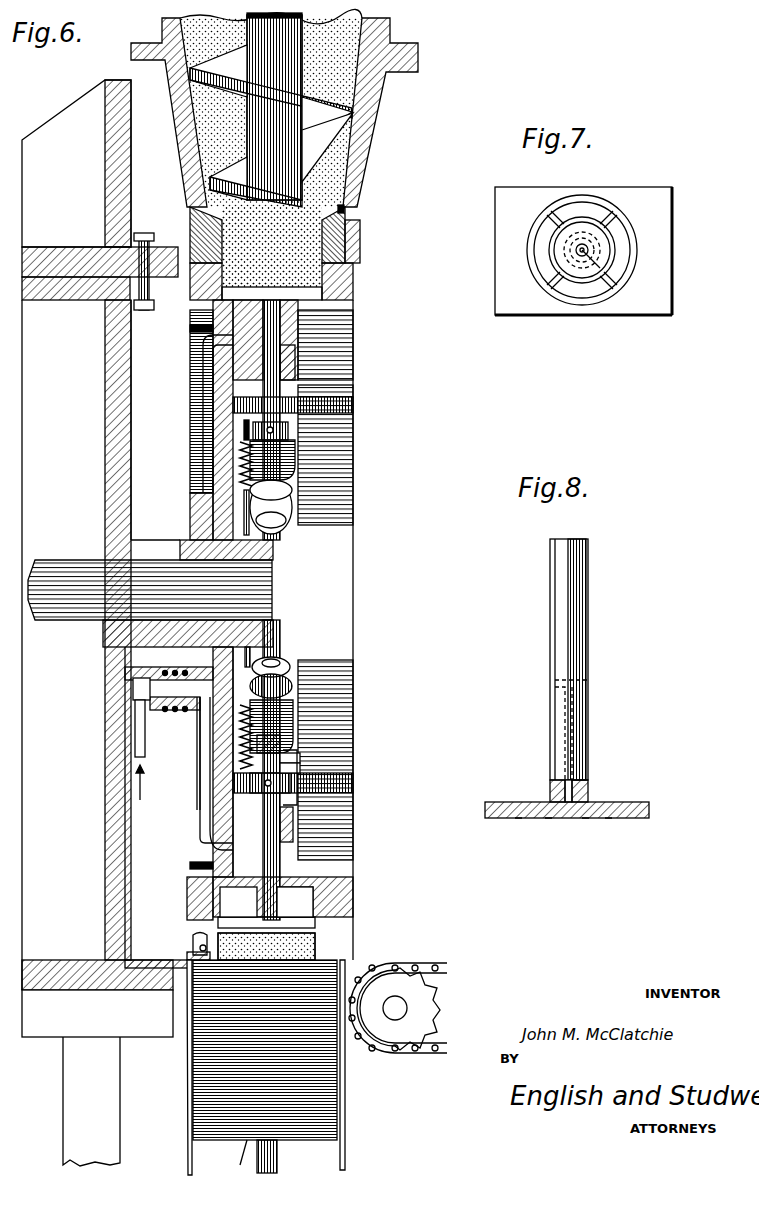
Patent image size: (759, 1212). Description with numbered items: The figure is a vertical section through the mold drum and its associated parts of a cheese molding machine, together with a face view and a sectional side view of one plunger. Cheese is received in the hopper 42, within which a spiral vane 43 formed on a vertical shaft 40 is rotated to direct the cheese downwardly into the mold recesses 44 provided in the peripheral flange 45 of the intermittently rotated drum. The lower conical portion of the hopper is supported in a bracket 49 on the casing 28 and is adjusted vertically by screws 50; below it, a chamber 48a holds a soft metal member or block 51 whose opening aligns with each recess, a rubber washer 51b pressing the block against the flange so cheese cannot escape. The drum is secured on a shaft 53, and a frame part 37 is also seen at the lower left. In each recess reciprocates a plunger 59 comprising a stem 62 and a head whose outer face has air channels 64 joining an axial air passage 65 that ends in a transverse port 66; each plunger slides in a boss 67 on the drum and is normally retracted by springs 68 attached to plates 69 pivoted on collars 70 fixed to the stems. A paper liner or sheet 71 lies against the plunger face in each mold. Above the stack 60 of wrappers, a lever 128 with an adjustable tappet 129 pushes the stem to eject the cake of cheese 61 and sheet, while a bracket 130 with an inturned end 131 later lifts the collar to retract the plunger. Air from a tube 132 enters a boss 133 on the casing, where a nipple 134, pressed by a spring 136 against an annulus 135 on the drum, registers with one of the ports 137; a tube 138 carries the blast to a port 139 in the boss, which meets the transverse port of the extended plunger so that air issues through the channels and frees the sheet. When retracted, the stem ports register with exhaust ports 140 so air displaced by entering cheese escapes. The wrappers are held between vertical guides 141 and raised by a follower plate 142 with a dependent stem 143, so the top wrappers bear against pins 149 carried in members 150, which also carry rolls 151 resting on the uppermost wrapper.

In FIG. 6, the casing 28 is at (110, 403).
In FIG. 6, the support leg 37 is at (97, 1063).
In FIG. 6, the vertical shaft 40 is at (302, 170).
In FIG. 6, the hopper 42 is at (418, 47).
In FIG. 6, the spiral vane 43 is at (352, 108).
In FIG. 6, the mold recesses 44 is at (322, 297).
In FIG. 6, the peripheral flange 45 is at (293, 350).
In FIG. 6, the chamber 48a is at (360, 250).
In FIG. 6, the bracket 49 is at (105, 168).
In FIG. 6, the screws 50 is at (150, 305).
In FIG. 6, the member or block 51 is at (345, 235).
In FIG. 6, the rubber washer 51b is at (344, 208).
In FIG. 6, the shaft 53 is at (255, 590).
In FIG. 6, the plunger 59 is at (353, 295).
In FIG. 7, the plunger 59 is at (665, 302).
In FIG. 8, the plunger 59 is at (630, 800).
In FIG. 6, the stack 60 is at (315, 1088).
In FIG. 6, the cake of cheese 61 is at (305, 945).
In FIG. 6, the stem 62 is at (280, 403).
In FIG. 7, the stem 62 is at (600, 250).
In FIG. 8, the stem 62 is at (588, 632).
In FIG. 7, the air channels 64 is at (548, 268).
In FIG. 8, the air channels 64 is at (518, 820).
In FIG. 6, the axial air passage 65 is at (295, 902).
In FIG. 7, the axial air passage 65 is at (588, 256).
In FIG. 8, the axial air passage 65 is at (575, 735).
In FIG. 6, the transverse port 66 is at (190, 386).
In FIG. 8, the transverse port 66 is at (575, 680).
In FIG. 6, the boss 67 is at (293, 360).
In FIG. 6, the springs 68 is at (240, 462).
In FIG. 6, the plates 69 is at (244, 432).
In FIG. 6, the collars 70 is at (288, 430).
In FIG. 6, the paper liner or sheet 71 is at (322, 278).
In FIG. 6, the lever 128 is at (280, 740).
In FIG. 6, the adjustable tappet 129 is at (300, 768).
In FIG. 6, the bracket 130 is at (300, 758).
In FIG. 6, the inturned end 131 is at (297, 800).
In FIG. 6, the tube 132 is at (135, 733).
In FIG. 6, the boss 133 is at (133, 688).
In FIG. 6, the nipple 134 is at (197, 720).
In FIG. 6, the annulus 135 is at (195, 497).
In FIG. 6, the spring 136 is at (178, 672).
In FIG. 6, the ports 137 is at (180, 712).
In FIG. 6, the tube 138 is at (203, 350).
In FIG. 6, the port 139 is at (200, 338).
In FIG. 6, the exhaust ports 140 is at (295, 365).
In FIG. 6, the vertical guides 141 is at (188, 1100).
In FIG. 6, the follower plate 142 is at (223, 1156).
In FIG. 6, the dependent stem 143 is at (277, 1160).
In FIG. 6, the pins 149 is at (200, 945).
In FIG. 6, the members 150 is at (190, 955).
In FIG. 6, the rolls 151 is at (200, 935).